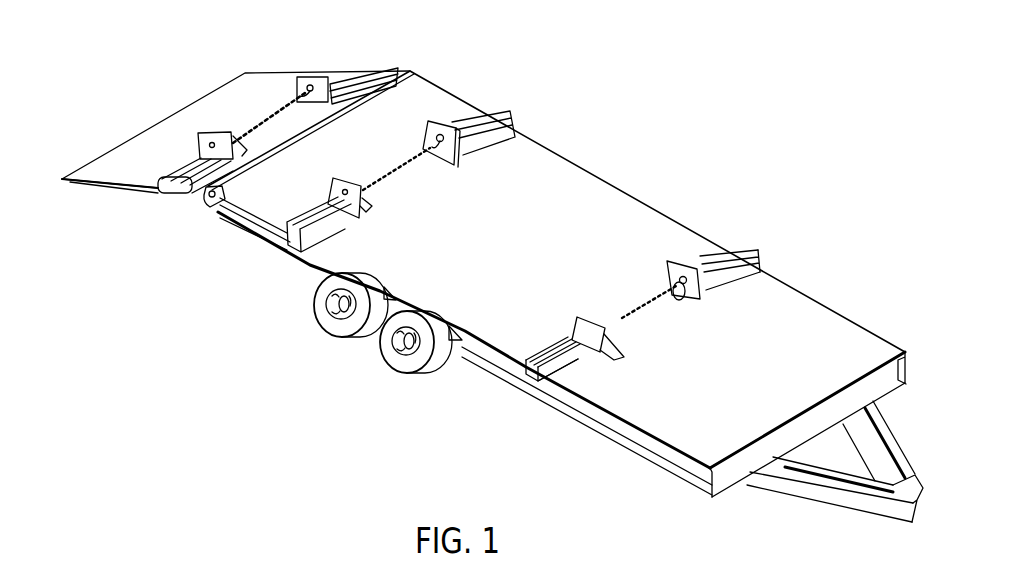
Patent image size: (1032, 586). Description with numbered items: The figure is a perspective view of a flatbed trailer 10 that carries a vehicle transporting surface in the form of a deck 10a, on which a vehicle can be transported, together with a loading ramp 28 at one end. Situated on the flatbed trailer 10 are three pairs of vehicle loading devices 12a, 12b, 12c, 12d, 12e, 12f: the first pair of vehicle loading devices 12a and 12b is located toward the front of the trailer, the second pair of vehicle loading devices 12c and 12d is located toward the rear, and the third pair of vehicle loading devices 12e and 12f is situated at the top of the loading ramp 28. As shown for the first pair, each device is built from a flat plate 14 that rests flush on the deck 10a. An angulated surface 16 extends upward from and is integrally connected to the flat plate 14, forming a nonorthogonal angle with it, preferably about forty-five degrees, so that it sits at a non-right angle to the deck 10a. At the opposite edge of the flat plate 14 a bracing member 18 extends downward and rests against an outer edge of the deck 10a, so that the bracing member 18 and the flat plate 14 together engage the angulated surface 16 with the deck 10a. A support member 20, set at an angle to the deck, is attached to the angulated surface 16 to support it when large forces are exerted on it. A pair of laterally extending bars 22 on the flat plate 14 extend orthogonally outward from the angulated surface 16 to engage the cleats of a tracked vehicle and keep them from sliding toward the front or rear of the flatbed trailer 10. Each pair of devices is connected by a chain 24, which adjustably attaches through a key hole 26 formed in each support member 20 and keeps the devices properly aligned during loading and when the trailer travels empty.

The flatbed trailer 10 is at (563, 296).
The deck 10a is at (827, 327).
The vehicle loading device 12a is at (754, 277).
The vehicle loading device 12b is at (621, 369).
The vehicle loading device 12c is at (473, 171).
The vehicle loading device 12d is at (388, 223).
The vehicle loading device 12e is at (305, 55).
The vehicle loading device 12f is at (185, 129).
The flat plate 14 is at (583, 370).
The angulated surface 16 is at (583, 328).
The bracing member 18 is at (538, 377).
The support member 20 is at (678, 270).
The laterally extending bars 22 is at (550, 357).
The chain 24 is at (642, 307).
The key hole 26 is at (684, 285).
The loading ramp 28 is at (140, 188).